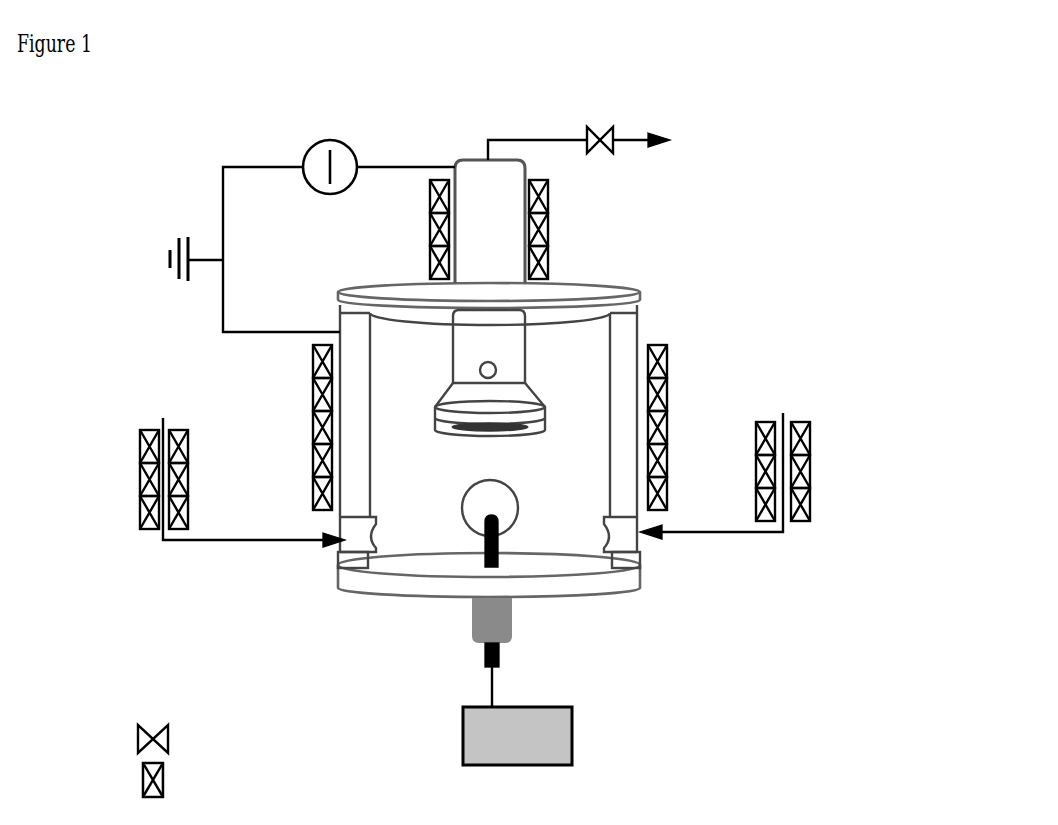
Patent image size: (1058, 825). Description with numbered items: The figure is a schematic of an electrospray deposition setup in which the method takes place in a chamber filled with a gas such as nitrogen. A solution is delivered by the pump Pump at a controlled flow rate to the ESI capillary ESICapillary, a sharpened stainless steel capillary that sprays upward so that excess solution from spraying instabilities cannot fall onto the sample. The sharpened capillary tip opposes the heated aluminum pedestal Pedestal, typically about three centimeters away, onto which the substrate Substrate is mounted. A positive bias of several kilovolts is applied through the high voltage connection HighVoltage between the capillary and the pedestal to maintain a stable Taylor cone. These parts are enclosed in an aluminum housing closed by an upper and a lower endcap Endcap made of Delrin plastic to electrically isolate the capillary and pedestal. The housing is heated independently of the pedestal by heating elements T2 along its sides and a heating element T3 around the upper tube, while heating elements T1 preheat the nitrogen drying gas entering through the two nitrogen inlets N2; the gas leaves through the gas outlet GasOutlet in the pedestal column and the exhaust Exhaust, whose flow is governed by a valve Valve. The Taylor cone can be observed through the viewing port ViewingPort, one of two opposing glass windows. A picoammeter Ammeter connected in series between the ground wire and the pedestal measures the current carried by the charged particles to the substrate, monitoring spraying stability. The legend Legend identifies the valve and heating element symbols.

The endcap Endcap is at (640, 293).
The exhaust Exhaust is at (643, 141).
The valve Valve is at (600, 140).
The heating element T3 is at (464, 229).
The heating element T2 is at (467, 427).
The heating element T1 is at (480, 500).
The nitrogen drying gas inlet N2 is at (480, 474).
The heated aluminum pedestal Pedestal is at (522, 318).
The substrate Substrate is at (477, 427).
The gas outlet GasOutlet is at (497, 367).
The viewing port ViewingPort is at (518, 515).
The ESI capillary ESICapillary is at (482, 555).
The high voltage connection HighVoltage is at (485, 648).
The pump Pump is at (444, 681).
The picoammeter Ammeter is at (312, 236).
The legend Legend is at (268, 758).